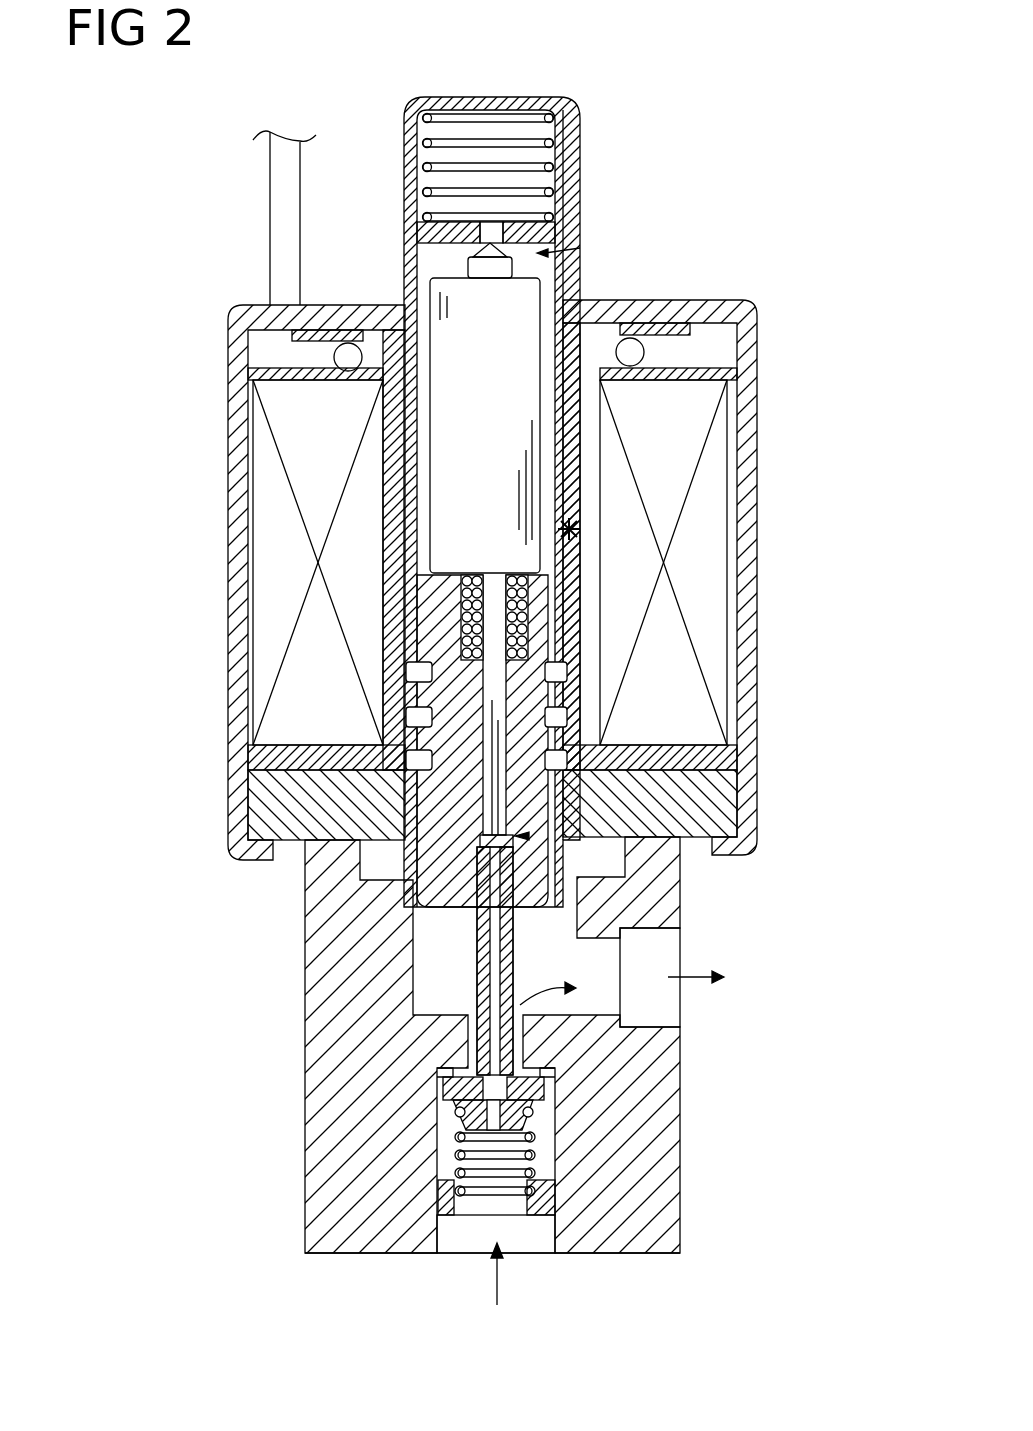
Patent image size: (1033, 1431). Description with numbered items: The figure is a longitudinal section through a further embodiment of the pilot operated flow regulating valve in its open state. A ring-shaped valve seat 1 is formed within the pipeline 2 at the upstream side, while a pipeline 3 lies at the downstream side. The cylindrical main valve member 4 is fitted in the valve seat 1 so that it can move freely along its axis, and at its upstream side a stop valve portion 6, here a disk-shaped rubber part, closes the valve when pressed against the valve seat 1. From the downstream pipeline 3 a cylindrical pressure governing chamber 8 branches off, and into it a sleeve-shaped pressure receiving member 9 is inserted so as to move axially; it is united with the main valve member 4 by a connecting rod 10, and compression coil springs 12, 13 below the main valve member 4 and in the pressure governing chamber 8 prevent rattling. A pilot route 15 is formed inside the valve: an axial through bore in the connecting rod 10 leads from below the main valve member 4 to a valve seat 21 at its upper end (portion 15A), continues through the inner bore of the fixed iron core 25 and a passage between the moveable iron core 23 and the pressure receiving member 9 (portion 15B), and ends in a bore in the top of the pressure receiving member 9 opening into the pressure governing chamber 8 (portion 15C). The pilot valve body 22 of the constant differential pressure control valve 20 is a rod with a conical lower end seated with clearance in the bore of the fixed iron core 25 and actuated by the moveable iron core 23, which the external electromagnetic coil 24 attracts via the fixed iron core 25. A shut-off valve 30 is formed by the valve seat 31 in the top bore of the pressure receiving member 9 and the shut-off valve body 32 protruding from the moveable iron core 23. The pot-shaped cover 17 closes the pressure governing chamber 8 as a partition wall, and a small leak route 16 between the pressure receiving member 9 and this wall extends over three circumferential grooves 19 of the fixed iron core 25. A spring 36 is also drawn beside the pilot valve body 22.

The valve seat 1 is at (560, 1068).
The pipeline 2 is at (557, 1242).
The pipeline 3 is at (650, 1005).
The main valve member 4 is at (455, 1100).
The stop valve portion 6 is at (445, 1082).
The pressure governing chamber 8 is at (417, 117).
The pressure receiving member 9 is at (565, 226).
The connecting rod 10 is at (475, 967).
The compression coil spring 12 is at (535, 1138).
The compression coil spring 13 is at (556, 144).
The pilot route 15 is at (562, 433).
The pilot route portion 15A is at (477, 942).
The pilot route portion 15B is at (570, 288).
The pilot route portion 15C is at (490, 222).
The leak route 16 is at (572, 527).
The pot-shaped cover 17 is at (578, 181).
The circumferential grooves 19 is at (567, 758).
The constant differential pressure control valve 20 is at (529, 836).
The valve seat 21 is at (513, 847).
The pilot valve body 22 is at (583, 810).
The moveable iron core 23 is at (450, 428).
The electromagnetic coil 24 is at (272, 531).
The fixed iron core 25 is at (440, 820).
The shut-off valve 30 is at (580, 248).
The valve seat 31 is at (436, 196).
The shut-off valve body 32 is at (483, 250).
The spring 36 is at (520, 632).